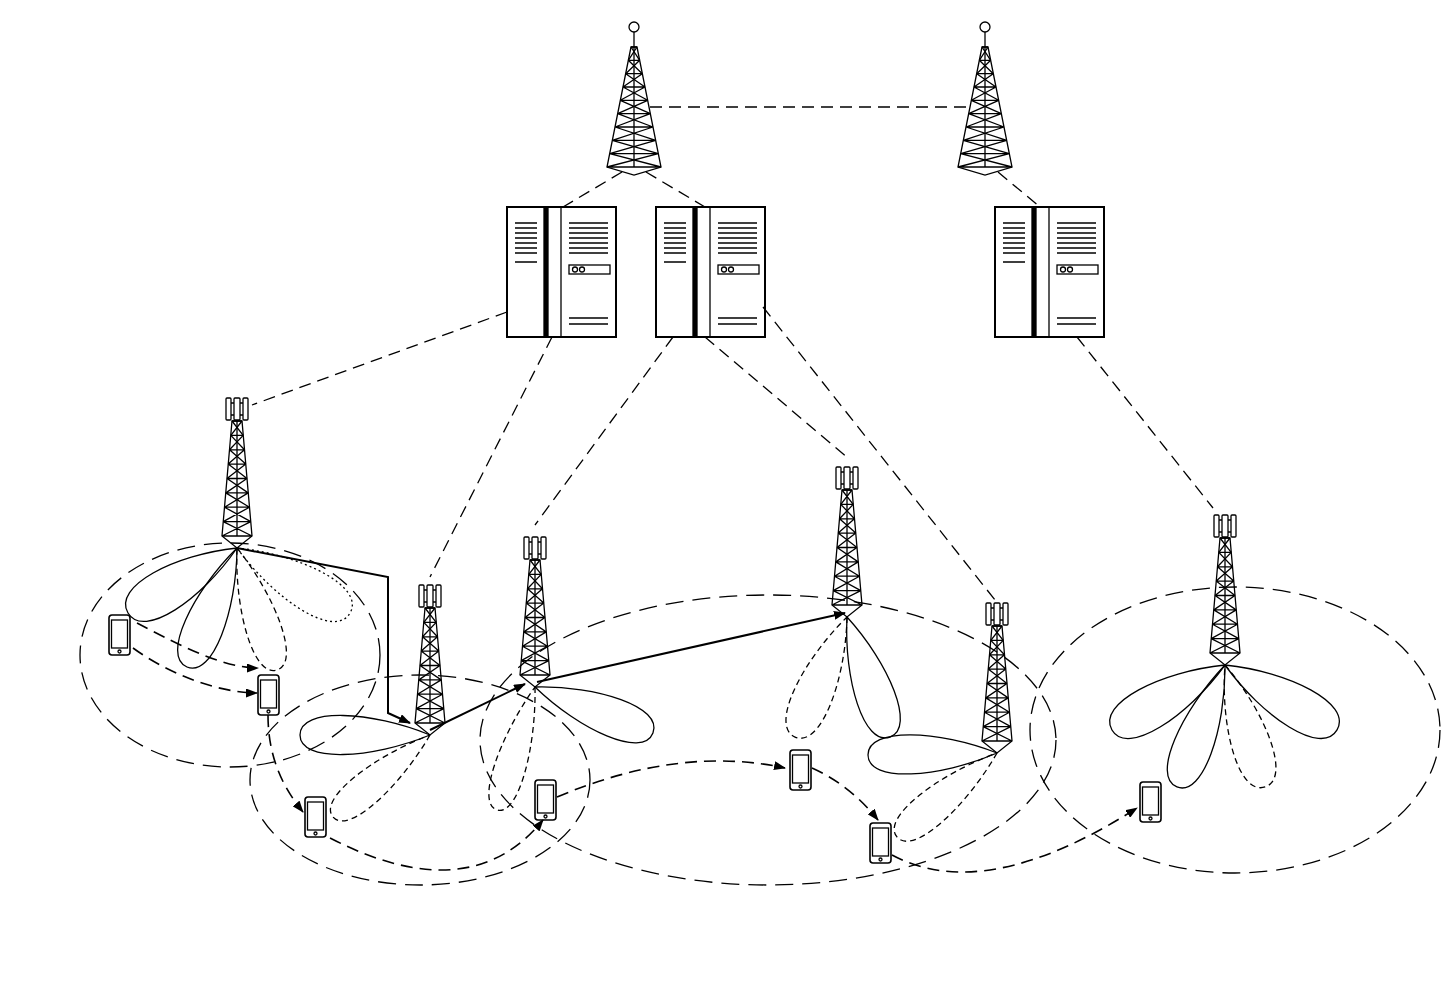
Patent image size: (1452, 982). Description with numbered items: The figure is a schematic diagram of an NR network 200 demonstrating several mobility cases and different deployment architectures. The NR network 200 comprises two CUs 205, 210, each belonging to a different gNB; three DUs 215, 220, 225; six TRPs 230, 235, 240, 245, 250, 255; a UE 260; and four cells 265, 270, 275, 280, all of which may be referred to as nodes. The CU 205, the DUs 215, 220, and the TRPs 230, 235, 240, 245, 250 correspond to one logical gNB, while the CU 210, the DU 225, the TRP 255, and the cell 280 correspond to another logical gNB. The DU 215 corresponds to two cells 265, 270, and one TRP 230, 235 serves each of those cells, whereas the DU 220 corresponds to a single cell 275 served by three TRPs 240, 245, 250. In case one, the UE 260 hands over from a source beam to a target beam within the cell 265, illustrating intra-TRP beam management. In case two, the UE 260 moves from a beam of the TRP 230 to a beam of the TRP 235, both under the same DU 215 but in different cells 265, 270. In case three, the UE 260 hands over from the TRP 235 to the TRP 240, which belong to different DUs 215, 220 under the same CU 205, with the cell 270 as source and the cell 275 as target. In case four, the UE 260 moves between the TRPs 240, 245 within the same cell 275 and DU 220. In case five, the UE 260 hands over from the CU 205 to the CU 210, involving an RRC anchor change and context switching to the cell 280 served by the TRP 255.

The NR network 200 is at (262, 136).
The CU 205 is at (622, 94).
The CU 210 is at (998, 94).
The DU 215 is at (533, 206).
The DU 220 is at (735, 206).
The DU 225 is at (1075, 206).
The TRP 230 is at (226, 466).
The TRP 235 is at (438, 642).
The TRP 240 is at (544, 604).
The TRP 245 is at (838, 524).
The TRP 250 is at (987, 691).
The TRP 255 is at (1233, 567).
The UE 260 is at (118, 657).
The cell 265 is at (193, 763).
The cell 270 is at (420, 780).
The cell 275 is at (768, 740).
The cell 280 is at (1235, 730).